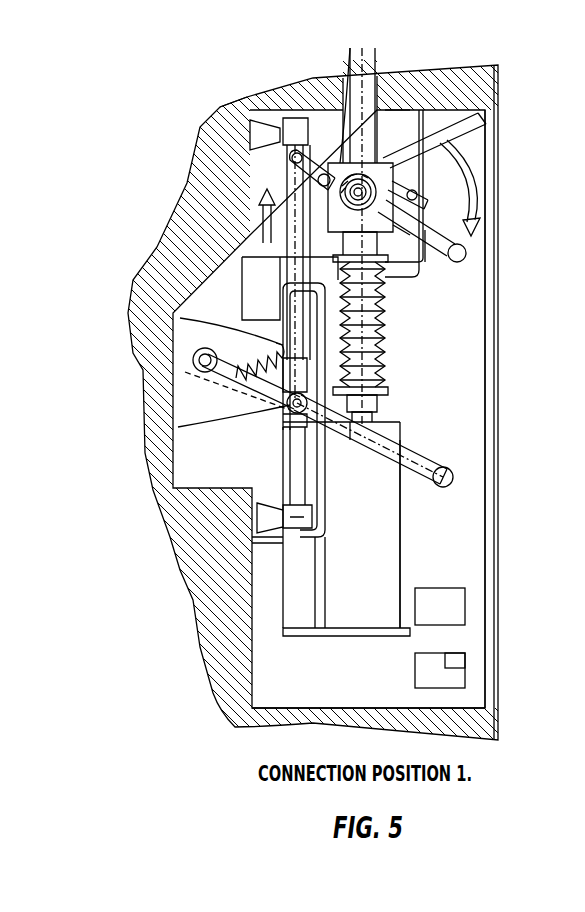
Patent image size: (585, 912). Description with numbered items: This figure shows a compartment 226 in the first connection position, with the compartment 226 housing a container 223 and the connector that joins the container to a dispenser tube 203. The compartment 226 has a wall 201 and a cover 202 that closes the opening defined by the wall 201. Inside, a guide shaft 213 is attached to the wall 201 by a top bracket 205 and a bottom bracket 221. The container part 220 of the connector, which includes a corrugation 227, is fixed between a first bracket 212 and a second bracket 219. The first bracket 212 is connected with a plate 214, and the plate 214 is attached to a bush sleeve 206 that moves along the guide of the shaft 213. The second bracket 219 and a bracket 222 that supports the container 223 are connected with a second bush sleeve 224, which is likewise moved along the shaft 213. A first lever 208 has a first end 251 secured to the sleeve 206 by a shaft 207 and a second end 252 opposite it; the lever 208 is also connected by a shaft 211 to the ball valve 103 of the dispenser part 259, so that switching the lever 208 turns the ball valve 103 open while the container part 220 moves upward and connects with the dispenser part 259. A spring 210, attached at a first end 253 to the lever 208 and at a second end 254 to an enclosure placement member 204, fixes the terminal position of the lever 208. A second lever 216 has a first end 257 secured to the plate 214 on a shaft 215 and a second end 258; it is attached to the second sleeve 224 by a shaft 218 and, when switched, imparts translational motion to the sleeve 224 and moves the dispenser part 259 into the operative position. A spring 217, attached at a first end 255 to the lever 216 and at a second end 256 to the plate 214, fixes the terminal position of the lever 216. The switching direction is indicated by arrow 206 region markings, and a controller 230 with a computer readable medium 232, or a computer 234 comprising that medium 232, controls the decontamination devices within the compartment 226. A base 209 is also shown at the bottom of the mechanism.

The ball valve 103 is at (378, 180).
The wall 201 is at (283, 82).
The cover 202 is at (491, 152).
The dispenser tube 203 is at (398, 108).
The enclosure placement member 204 is at (427, 128).
The top bracket 205 is at (227, 103).
The bush sleeve 206 is at (290, 220).
The shaft 207 is at (266, 137).
The lever 208 is at (428, 262).
The base plate 209 is at (330, 627).
The spring 210 is at (418, 197).
The shaft 211 is at (402, 228).
The bracket 212 is at (295, 248).
The shaft 213 is at (270, 262).
The plate 214 is at (242, 290).
The shaft 215 is at (193, 357).
The lever 216 is at (455, 480).
The spring 217 is at (200, 368).
The shaft 218 is at (298, 415).
The bracket 219 is at (387, 390).
The container part 220 is at (383, 302).
The bottom bracket 221 is at (265, 517).
The bracket 222 is at (327, 623).
The container 223 is at (380, 578).
The bush sleeve 224 is at (440, 484).
The compartment 226 is at (238, 668).
The corrugation 227 is at (385, 355).
The controller 230 is at (458, 604).
The computer readable medium 232 is at (458, 660).
The computer 234 is at (453, 678).
The first end 251 is at (460, 262).
The second end 252 is at (318, 110).
The first end 253 is at (356, 225).
The second end 254 is at (430, 205).
The first end 255 is at (287, 401).
The second end 256 is at (250, 328).
The first end 257 is at (240, 366).
The second end 258 is at (452, 468).
The dispenser part 259 is at (400, 163).